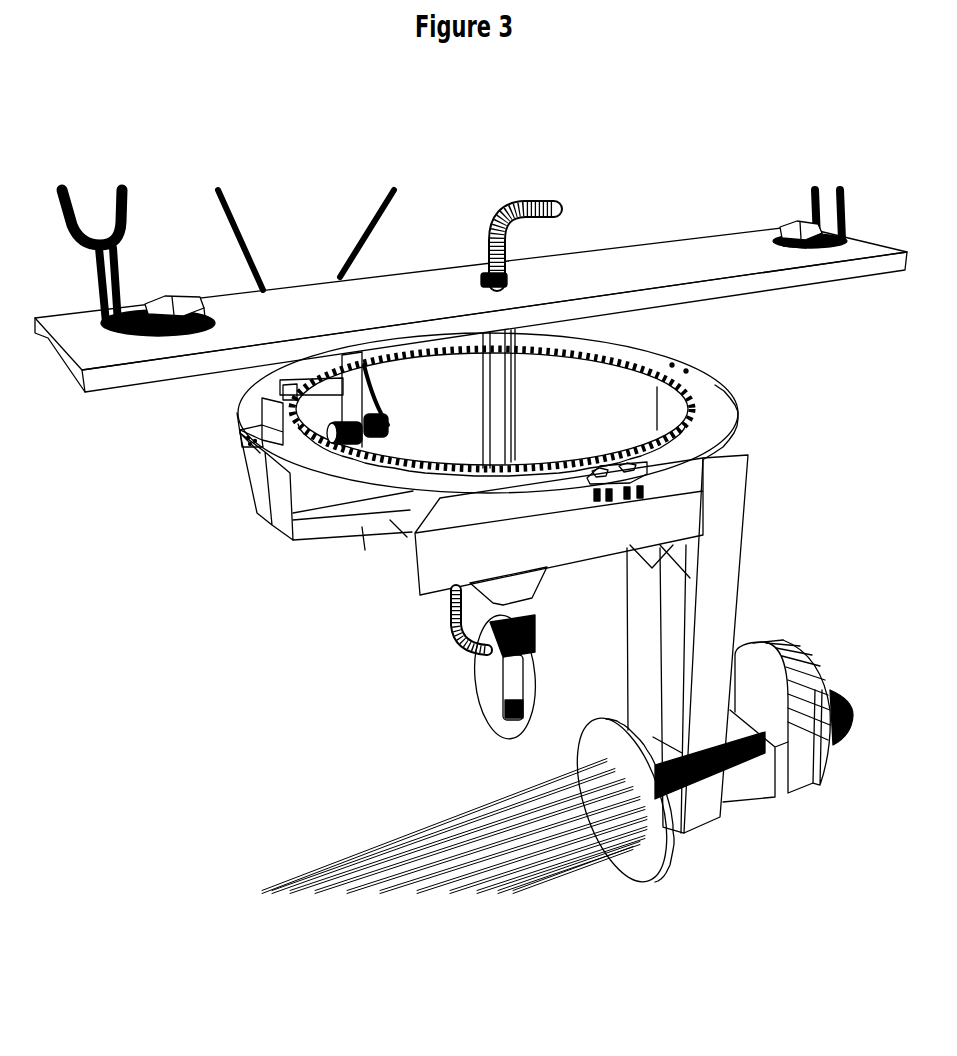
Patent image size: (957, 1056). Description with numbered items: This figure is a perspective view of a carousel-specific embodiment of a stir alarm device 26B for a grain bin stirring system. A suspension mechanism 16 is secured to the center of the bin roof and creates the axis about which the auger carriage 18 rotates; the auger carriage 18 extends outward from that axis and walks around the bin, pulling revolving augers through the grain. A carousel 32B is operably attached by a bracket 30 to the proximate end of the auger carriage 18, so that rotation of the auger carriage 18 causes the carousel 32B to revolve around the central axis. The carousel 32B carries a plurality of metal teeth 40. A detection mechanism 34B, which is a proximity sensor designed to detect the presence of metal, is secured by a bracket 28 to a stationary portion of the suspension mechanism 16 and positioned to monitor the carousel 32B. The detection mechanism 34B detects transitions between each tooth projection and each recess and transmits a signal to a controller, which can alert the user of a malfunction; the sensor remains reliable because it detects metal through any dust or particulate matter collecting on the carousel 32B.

The suspension mechanism 16 is at (690, 253).
The auger carriage 18 is at (497, 840).
The stir alarm device 26B is at (347, 132).
The bracket 28 is at (353, 363).
The bracket 30 is at (273, 487).
The carousel 32B is at (708, 405).
The detection mechanism 34B is at (377, 442).
The metal teeth 40 is at (600, 365).